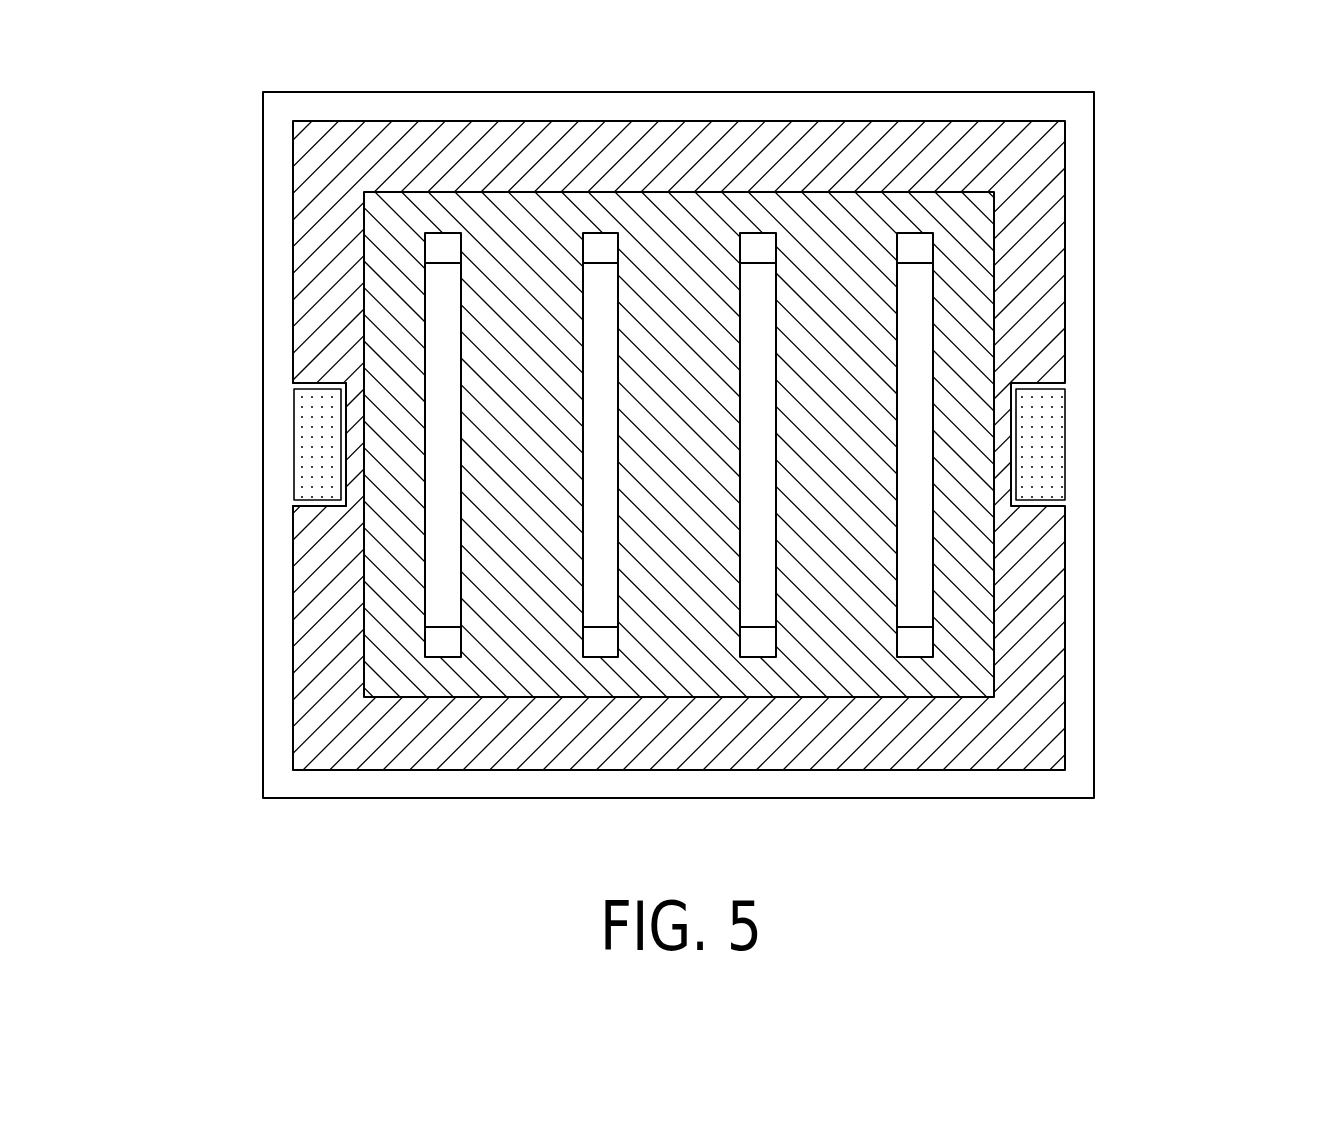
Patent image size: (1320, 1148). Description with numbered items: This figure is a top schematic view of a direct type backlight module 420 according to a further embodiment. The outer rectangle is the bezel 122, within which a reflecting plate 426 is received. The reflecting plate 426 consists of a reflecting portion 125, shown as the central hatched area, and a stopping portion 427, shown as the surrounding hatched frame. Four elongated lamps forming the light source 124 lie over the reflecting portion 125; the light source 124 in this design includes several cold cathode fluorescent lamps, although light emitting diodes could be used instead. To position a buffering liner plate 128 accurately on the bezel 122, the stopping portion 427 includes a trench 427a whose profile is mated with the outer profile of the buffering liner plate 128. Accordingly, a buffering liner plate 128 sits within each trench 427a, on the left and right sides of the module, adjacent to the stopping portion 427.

The direct type backlight module 420 is at (1255, 845).
The bezel 122 is at (1077, 235).
The buffering liner plate 128 is at (303, 477).
The trench 427a is at (320, 382).
The reflecting plate 426 is at (167, 555).
The reflecting portion 125 is at (382, 583).
The stopping portion 427 is at (303, 658).
The light source 124 is at (913, 648).